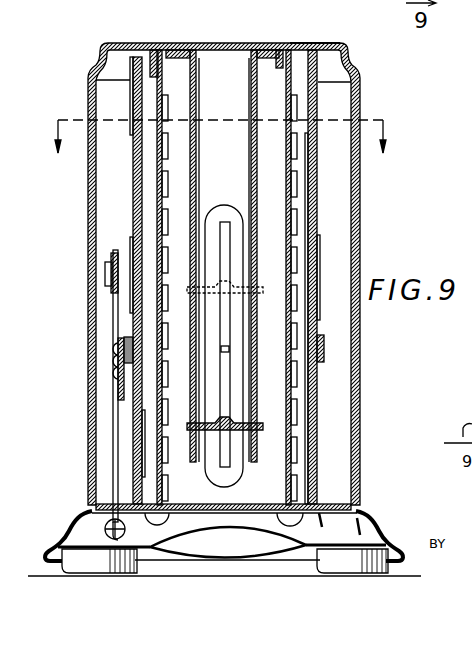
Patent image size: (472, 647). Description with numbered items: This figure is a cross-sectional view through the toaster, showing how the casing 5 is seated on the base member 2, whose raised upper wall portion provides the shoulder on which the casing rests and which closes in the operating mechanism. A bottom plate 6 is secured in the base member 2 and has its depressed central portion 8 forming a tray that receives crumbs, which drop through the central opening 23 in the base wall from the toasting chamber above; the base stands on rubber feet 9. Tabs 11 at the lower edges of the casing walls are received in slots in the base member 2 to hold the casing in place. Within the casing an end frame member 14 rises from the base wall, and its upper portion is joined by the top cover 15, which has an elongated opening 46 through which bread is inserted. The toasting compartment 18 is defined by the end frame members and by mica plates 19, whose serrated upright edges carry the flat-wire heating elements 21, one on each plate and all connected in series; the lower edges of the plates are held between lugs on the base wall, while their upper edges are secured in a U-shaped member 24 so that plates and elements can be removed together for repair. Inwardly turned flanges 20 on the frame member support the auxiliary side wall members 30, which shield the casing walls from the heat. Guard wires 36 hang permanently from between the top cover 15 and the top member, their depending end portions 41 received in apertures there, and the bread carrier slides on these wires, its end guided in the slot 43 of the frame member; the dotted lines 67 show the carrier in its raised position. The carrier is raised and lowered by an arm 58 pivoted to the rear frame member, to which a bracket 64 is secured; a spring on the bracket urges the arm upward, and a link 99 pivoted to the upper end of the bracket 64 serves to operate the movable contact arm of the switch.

The base member 2 is at (379, 525).
The casing 5 is at (355, 258).
The bottom plate 6 is at (311, 546).
The central portion 8 is at (187, 562).
The feet 9 is at (90, 567).
The tabs 11 is at (117, 531).
The end frame member 14 is at (220, 141).
The top cover 15 is at (314, 46).
The toasting compartment 18 is at (222, 97).
The mica plates 19 is at (162, 148).
The inwardly turned flanges 20 is at (316, 134).
The heating elements 21 is at (163, 226).
The central opening 23 is at (238, 503).
The U-shaped member 24 is at (155, 78).
The auxiliary side wall members 30 is at (137, 149).
The guard wires 36 is at (250, 144).
The depending end portions 41 is at (281, 60).
The slot 43 is at (226, 383).
The elongated opening 46 is at (213, 47).
The arm 58 is at (117, 390).
The bracket 64 is at (113, 428).
The dotted lines 67 is at (198, 298).
The link 99 is at (117, 252).